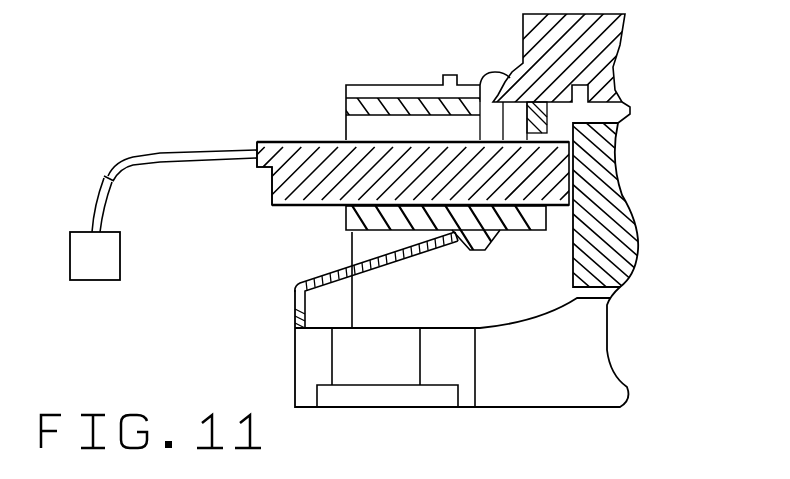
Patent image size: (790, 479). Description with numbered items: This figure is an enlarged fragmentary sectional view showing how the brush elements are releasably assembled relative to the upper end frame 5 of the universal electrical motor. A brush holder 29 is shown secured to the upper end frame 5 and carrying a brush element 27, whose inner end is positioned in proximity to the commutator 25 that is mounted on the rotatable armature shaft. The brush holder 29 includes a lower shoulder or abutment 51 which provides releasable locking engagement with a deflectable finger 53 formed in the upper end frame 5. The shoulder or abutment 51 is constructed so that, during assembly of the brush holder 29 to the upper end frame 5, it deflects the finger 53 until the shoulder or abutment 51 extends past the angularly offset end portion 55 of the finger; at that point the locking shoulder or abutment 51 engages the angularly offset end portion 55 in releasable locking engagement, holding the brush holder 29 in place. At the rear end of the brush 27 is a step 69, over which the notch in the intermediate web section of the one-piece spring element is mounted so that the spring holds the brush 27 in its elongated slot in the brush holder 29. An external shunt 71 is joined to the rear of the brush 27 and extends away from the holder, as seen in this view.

The upper end frame 5 is at (597, 57).
The commutator 25 is at (603, 203).
The brush element 27 is at (312, 157).
The brush holder 29 is at (396, 98).
The lower shoulder or abutment 51 is at (502, 235).
The deflectable finger 53 is at (378, 263).
The angularly offset end portion 55 is at (480, 248).
The step 69 is at (260, 170).
The external shunt 71 is at (143, 152).